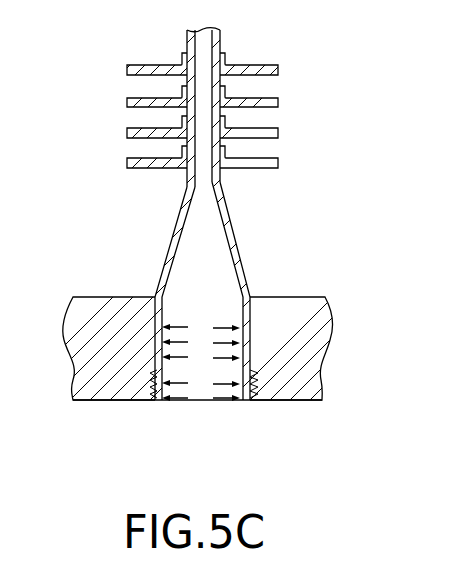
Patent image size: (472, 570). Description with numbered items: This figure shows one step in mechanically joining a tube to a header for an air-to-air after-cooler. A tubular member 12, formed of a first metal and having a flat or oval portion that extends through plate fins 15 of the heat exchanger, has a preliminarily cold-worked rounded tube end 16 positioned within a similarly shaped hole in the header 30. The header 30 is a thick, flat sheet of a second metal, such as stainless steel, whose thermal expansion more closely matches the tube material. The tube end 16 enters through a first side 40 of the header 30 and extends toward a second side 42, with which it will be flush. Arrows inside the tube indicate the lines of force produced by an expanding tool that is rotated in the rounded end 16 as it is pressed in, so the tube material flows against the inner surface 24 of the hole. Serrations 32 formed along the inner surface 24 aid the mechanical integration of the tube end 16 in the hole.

The tubular member 12 is at (235, 243).
The plate fin 15 is at (278, 70).
The tube end 16 is at (165, 300).
The inner surface 24 is at (252, 308).
The header 30 is at (316, 349).
The serrations 32 is at (250, 400).
The first side 40 is at (119, 296).
The second side 42 is at (121, 400).